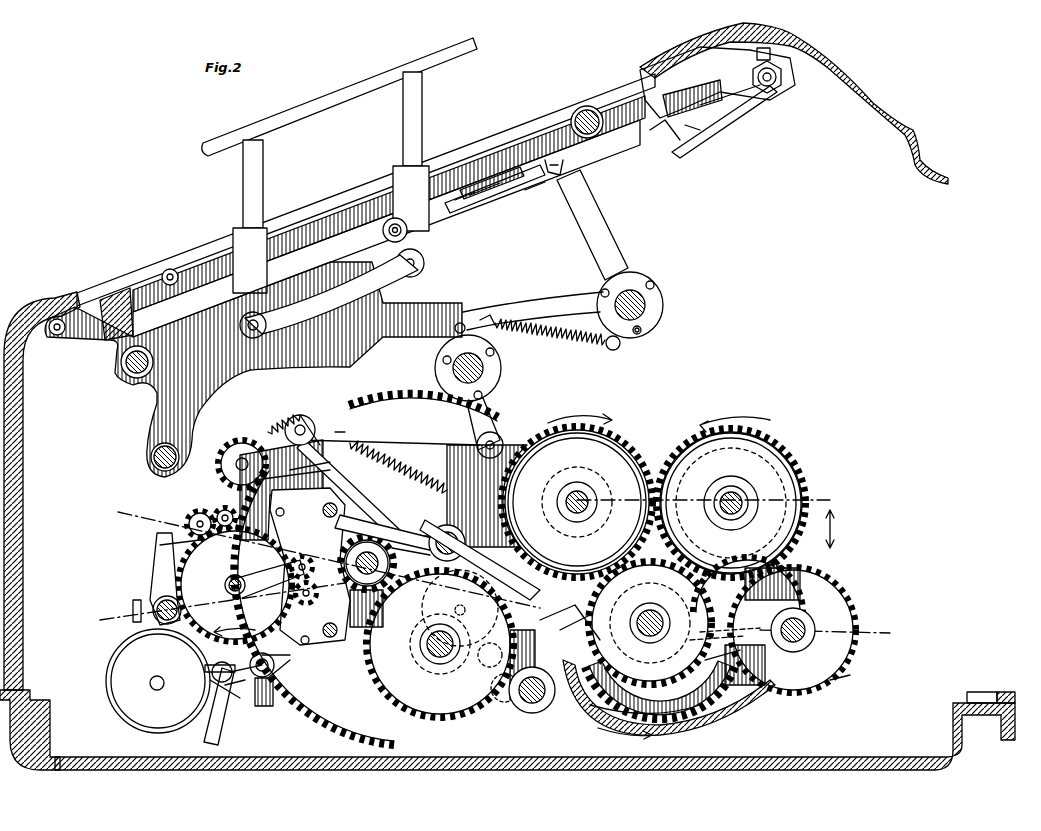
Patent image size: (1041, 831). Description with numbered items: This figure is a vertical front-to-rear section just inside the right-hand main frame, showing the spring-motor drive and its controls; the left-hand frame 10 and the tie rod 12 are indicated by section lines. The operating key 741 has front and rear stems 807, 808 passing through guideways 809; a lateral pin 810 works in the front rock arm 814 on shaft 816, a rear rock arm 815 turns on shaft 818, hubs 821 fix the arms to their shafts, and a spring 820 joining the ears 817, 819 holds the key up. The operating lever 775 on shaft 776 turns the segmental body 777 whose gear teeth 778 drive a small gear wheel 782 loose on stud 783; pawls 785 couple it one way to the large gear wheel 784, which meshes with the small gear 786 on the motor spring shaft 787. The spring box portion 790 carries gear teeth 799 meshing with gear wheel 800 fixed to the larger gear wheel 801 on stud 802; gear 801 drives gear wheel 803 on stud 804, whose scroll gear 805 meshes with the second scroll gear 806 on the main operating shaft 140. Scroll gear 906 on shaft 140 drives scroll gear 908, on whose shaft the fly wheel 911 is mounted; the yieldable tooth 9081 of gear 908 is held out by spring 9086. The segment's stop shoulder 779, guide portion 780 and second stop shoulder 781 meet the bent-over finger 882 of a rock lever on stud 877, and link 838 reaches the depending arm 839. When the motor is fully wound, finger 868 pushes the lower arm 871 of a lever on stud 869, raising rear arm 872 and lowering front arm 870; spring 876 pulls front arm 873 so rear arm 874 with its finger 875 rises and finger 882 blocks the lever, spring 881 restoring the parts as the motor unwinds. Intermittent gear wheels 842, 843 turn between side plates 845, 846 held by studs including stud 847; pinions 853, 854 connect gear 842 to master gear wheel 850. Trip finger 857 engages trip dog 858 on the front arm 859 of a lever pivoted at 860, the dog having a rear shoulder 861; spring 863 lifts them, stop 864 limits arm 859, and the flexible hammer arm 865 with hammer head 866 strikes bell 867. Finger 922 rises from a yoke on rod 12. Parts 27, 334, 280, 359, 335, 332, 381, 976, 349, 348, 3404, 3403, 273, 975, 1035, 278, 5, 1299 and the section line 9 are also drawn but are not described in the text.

The cover 27 is at (728, 42).
The bracket 334 is at (737, 57).
The pivot shaft 280 is at (784, 77).
The link 359 is at (740, 105).
The arm 335 is at (700, 128).
The lever 332 is at (660, 138).
The link 381 is at (695, 132).
The operating key 741 is at (360, 96).
The rear stem 808 is at (403, 122).
The front stem 807 is at (262, 170).
The fork 976 is at (571, 140).
The slide 349 is at (500, 185).
The slide bar 348 is at (534, 194).
The block 3404 is at (490, 200).
The block 3403 is at (462, 208).
The frame rail 273 is at (405, 250).
The guideways 809 is at (383, 230).
The arm 975 is at (585, 220).
The rear rock arm 815 is at (533, 305).
The shaft 818 is at (645, 305).
The pin 1035 is at (460, 322).
The upwardly projecting ear 817 is at (501, 312).
The lateral pin 810 is at (268, 323).
The front rock arm 814 is at (384, 349).
The shaft 816 is at (485, 365).
The hubs 821 is at (645, 325).
The spring 820 is at (568, 340).
The downwardly projecting ear 819 is at (620, 347).
The frame plate 278 is at (133, 373).
The depending arm 839 is at (485, 410).
The stud 869 is at (275, 420).
The front arm 873 is at (308, 412).
The gear teeth 799 is at (412, 404).
The front arm 870 is at (242, 445).
The spring 876 is at (318, 430).
The rear arm 872 is at (359, 424).
The right-hand portion of spring box 790 is at (350, 740).
The spring 881 is at (398, 450).
The link 838 is at (398, 467).
The finger 868 is at (289, 470).
The lower arm 871 is at (310, 465).
The bent-over finger 875 is at (345, 470).
The rear arm 874 is at (395, 505).
The shaft 5 is at (165, 468).
The side plate 845 is at (310, 566).
The stud 847 is at (353, 571).
The intermittent gear wheel 843 is at (367, 555).
The small gear 786 is at (387, 533).
The stop shoulder 779 is at (485, 582).
The stud 877 is at (464, 543).
The larger gear wheel 801 is at (577, 496).
The stud 802 is at (585, 490).
The gear wheel 800 is at (582, 519).
The gear wheel 803 is at (731, 497).
The stud 804 is at (742, 495).
The scroll gear 805 is at (731, 503).
The section line 9 is at (465, 561).
The frame 10 is at (502, 571).
The finger 922 is at (165, 548).
The tie rod 12 is at (160, 590).
The intermediate pinion 853 is at (215, 527).
The intermittent gear wheel 842 is at (266, 556).
The master gear wheel 850 is at (235, 585).
The intermediate pinion 854 is at (270, 589).
The pawls 785 is at (467, 636).
The motor spring shaft 787 is at (427, 603).
The small gear wheel 782 is at (427, 641).
The stud 783 is at (420, 640).
The large gear wheel 784 is at (441, 655).
The bent-over finger 882 is at (480, 560).
The guide portion 780 is at (638, 620).
The gear teeth 778 is at (571, 630).
The segmental body 777 is at (567, 634).
The second stop shoulder 781 is at (645, 623).
The scroll gear wheel 906 is at (748, 584).
The yieldable tooth 9081 is at (730, 622).
The spring 9086 is at (716, 647).
The scroll gear 908 is at (715, 663).
The main operating shaft 140 is at (800, 640).
The arm 1299 is at (815, 675).
The scroll gear 806 is at (776, 703).
The fly wheel 911 is at (663, 715).
The operating lever 775 is at (522, 705).
The operating lever shaft 776 is at (598, 728).
The spring 863 is at (210, 662).
The stop 864 is at (212, 670).
The front arm 859 is at (222, 678).
The bell 867 is at (158, 681).
The trip dog 858 is at (228, 688).
The flexible hammer arm 865 is at (210, 702).
The hammer head 866 is at (212, 725).
The trip finger 857 is at (276, 662).
The pivot pin 860 is at (275, 668).
The rear shoulder 861 is at (274, 690).
The side plate 846 is at (274, 700).